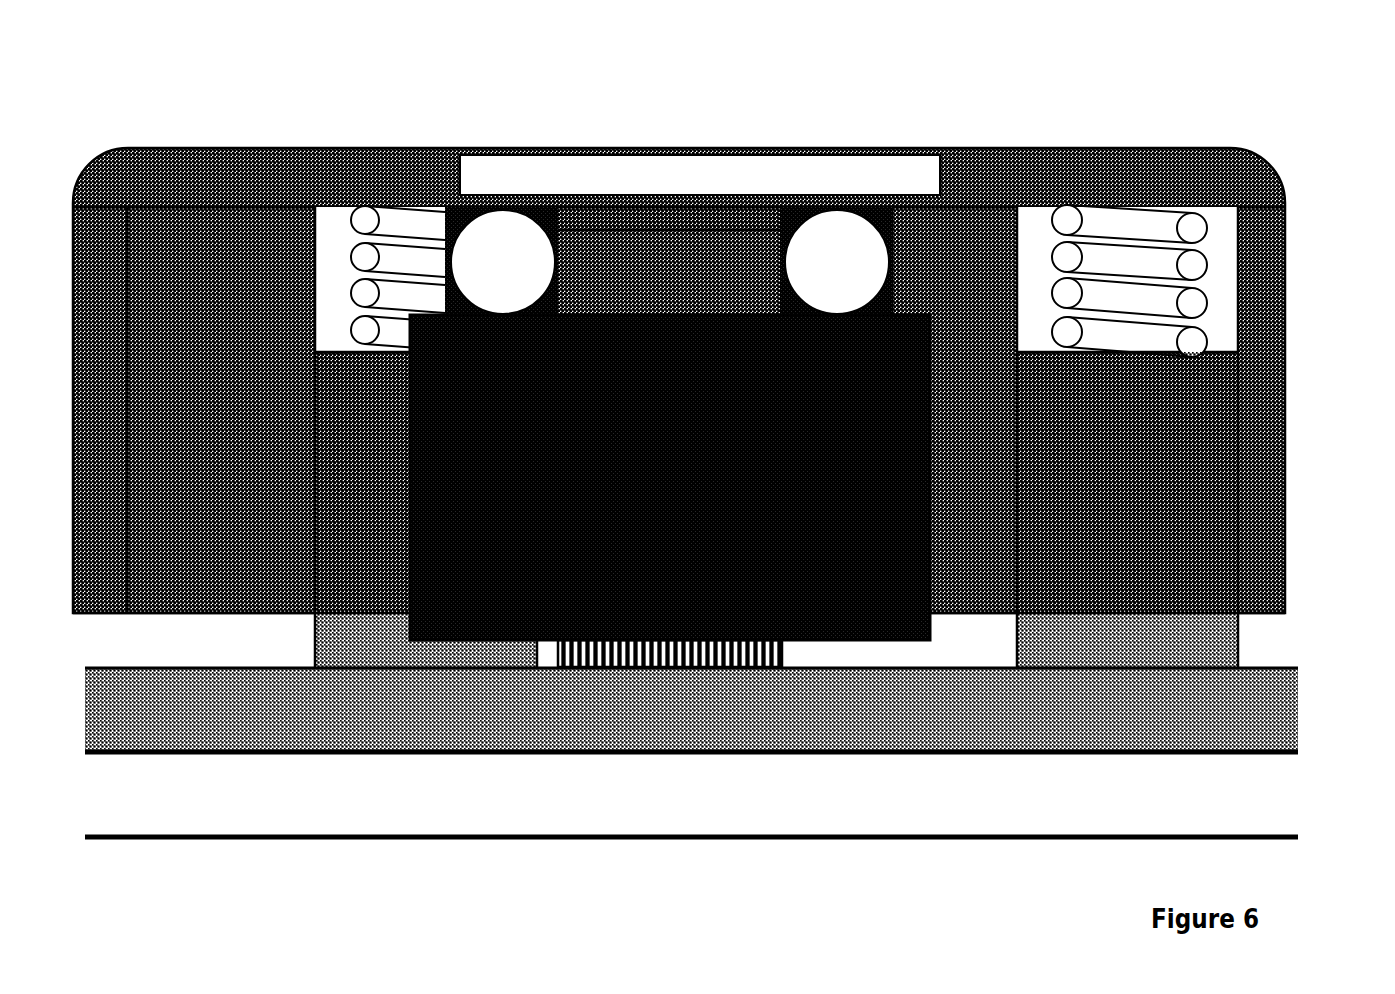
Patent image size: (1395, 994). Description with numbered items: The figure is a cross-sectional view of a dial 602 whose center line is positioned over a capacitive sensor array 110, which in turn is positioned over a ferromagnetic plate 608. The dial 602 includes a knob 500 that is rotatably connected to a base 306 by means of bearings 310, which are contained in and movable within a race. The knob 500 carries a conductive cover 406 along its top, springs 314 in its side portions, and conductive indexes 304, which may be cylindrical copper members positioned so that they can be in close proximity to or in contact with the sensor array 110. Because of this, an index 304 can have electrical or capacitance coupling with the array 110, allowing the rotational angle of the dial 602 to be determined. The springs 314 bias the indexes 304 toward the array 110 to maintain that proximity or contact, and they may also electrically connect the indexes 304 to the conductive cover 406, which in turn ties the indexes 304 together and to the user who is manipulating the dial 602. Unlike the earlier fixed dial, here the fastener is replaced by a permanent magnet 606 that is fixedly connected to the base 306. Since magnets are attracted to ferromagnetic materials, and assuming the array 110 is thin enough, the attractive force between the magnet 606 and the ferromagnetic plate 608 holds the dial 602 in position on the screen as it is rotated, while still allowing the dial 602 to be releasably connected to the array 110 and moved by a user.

The dial 602 is at (720, 338).
The knob 500 is at (672, 150).
The conductive cover 406 is at (821, 189).
The springs 314 is at (363, 292).
The bearings 310 is at (484, 274).
The base 306 is at (648, 475).
The indexes 304 is at (346, 534).
The permanent magnet 606 is at (672, 637).
The capacitive sensor array 110 is at (691, 710).
The ferromagnetic plate 608 is at (691, 810).